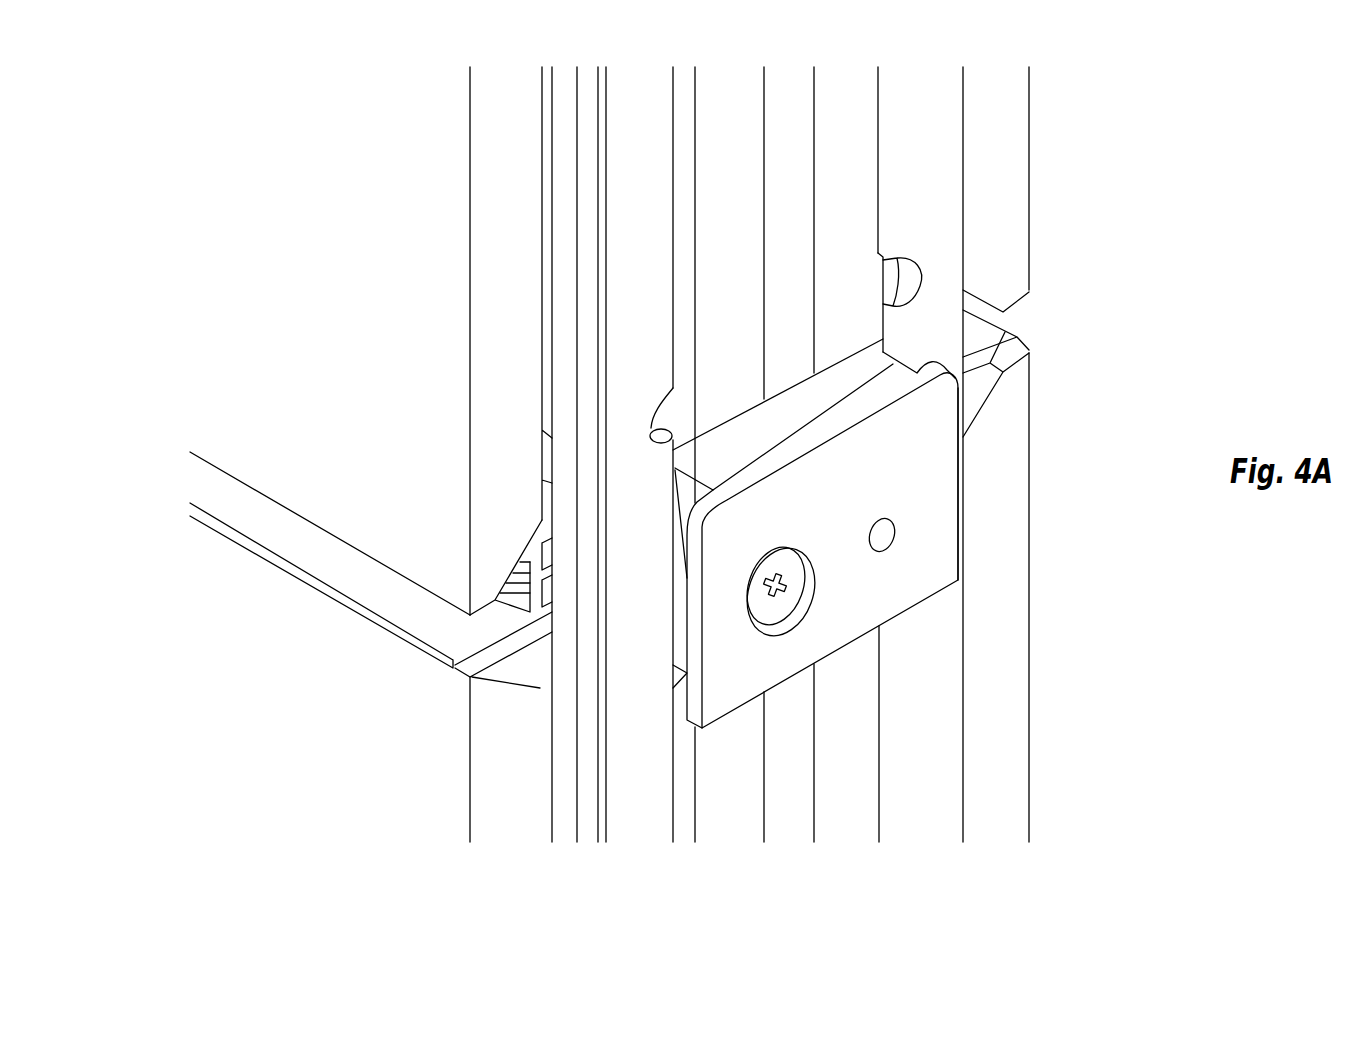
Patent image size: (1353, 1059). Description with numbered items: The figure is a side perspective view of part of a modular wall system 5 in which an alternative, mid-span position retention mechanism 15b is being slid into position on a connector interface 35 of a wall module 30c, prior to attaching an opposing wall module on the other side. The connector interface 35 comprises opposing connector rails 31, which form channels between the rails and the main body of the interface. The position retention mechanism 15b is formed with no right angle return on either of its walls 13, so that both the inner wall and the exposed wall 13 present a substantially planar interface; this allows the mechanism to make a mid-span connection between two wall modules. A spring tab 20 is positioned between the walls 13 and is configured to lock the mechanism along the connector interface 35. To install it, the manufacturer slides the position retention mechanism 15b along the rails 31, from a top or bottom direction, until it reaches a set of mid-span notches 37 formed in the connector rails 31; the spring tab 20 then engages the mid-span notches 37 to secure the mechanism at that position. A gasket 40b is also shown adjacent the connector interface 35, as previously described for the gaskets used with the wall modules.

The system 5 is at (1170, 96).
The connector interface 35 is at (745, 60).
The mid-span notches 37 is at (666, 416).
The gasket 40b is at (986, 332).
The wall module 30c is at (168, 388).
The mid-span position retention mechanism 15b is at (978, 497).
The position retention mechanism wall 13 is at (920, 576).
The spring tab 20 is at (690, 658).
The connector rails 31 is at (643, 822).